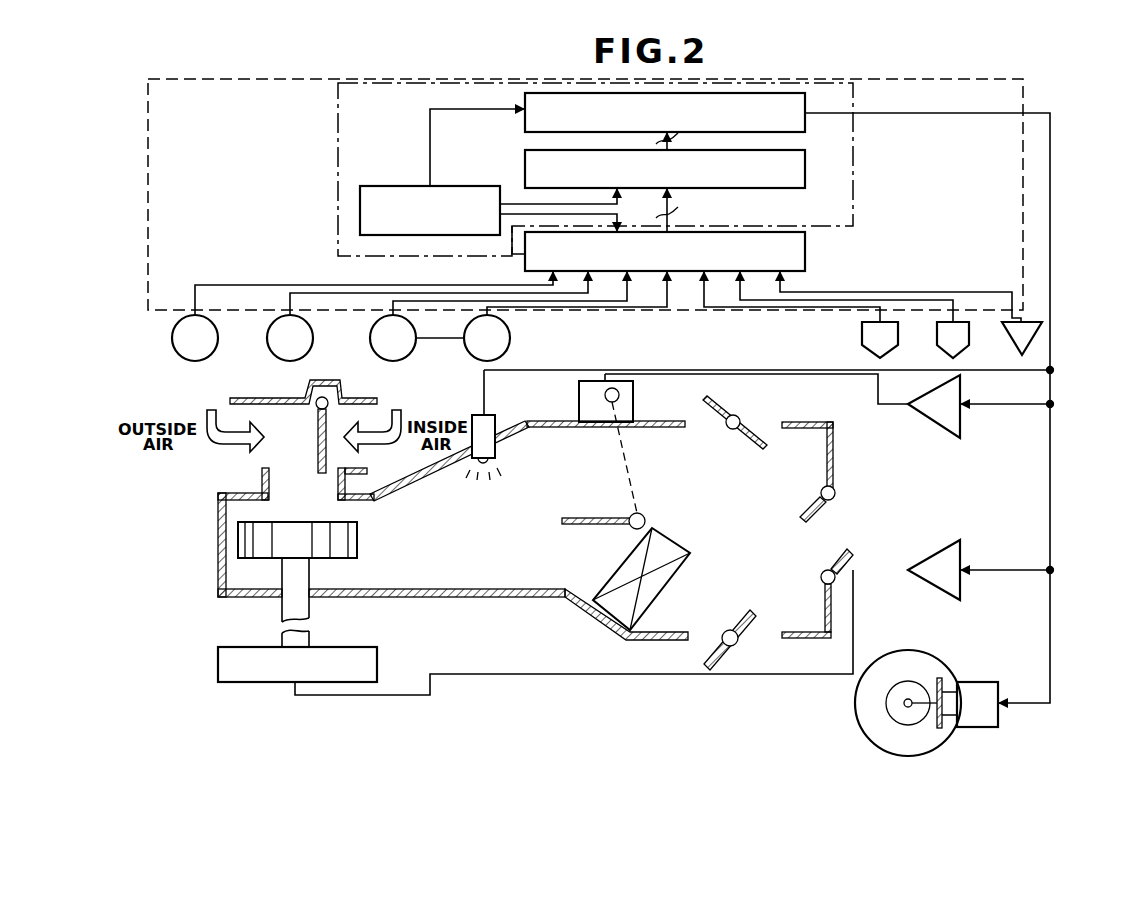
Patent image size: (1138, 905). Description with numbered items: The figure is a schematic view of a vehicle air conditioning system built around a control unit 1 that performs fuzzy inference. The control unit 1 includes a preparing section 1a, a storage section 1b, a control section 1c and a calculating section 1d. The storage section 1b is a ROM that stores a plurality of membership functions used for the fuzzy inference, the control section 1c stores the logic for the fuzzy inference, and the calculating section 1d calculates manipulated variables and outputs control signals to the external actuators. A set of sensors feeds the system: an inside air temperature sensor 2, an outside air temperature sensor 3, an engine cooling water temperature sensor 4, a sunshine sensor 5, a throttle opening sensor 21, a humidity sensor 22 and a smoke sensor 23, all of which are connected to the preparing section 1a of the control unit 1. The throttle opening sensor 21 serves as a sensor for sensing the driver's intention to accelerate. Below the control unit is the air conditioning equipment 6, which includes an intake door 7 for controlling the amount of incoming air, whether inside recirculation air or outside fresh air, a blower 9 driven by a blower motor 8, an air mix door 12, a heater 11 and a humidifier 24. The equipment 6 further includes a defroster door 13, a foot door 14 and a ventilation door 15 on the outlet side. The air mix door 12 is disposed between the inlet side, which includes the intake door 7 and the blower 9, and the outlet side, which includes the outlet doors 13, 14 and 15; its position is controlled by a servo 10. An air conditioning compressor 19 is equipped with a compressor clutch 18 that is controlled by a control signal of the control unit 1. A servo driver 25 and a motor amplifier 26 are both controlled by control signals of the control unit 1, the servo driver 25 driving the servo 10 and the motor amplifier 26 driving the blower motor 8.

The control unit 1 is at (1024, 95).
The preparing section 1a is at (805, 252).
The storage section 1b is at (525, 161).
The control section 1c is at (370, 186).
The calculating section 1d is at (525, 128).
The inside air temperature sensor 2 is at (511, 337).
The outside air temperature sensor 3 is at (376, 354).
The engine cooling water temperature sensor 4 is at (268, 350).
The sunshine sensor 5 is at (172, 338).
The air conditioning equipment 6 is at (218, 496).
The intake door 7 is at (318, 431).
The blower motor 8 is at (377, 661).
The blower 9 is at (357, 538).
The servo 10 is at (579, 389).
The heater 11 is at (680, 548).
The air mix door 12 is at (567, 522).
The defroster door 13 is at (714, 404).
The foot door 14 is at (719, 656).
The ventilation door 15 is at (844, 550).
The compressor clutch 18 is at (988, 682).
The air conditioning compressor 19 is at (856, 712).
The throttle opening sensor 21 is at (862, 337).
The humidity sensor 22 is at (938, 342).
The smoke sensor 23 is at (1038, 339).
The humidifier 24 is at (496, 420).
The servo driver 25 is at (921, 419).
The motor amplifier 26 is at (918, 578).